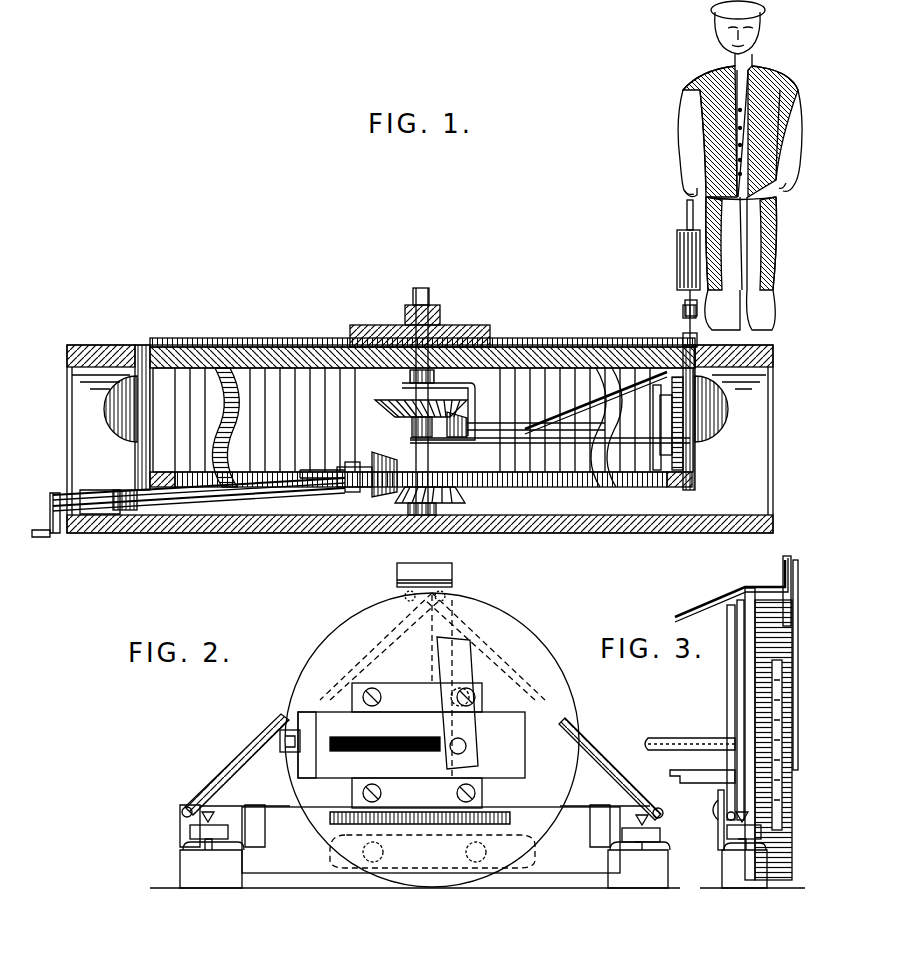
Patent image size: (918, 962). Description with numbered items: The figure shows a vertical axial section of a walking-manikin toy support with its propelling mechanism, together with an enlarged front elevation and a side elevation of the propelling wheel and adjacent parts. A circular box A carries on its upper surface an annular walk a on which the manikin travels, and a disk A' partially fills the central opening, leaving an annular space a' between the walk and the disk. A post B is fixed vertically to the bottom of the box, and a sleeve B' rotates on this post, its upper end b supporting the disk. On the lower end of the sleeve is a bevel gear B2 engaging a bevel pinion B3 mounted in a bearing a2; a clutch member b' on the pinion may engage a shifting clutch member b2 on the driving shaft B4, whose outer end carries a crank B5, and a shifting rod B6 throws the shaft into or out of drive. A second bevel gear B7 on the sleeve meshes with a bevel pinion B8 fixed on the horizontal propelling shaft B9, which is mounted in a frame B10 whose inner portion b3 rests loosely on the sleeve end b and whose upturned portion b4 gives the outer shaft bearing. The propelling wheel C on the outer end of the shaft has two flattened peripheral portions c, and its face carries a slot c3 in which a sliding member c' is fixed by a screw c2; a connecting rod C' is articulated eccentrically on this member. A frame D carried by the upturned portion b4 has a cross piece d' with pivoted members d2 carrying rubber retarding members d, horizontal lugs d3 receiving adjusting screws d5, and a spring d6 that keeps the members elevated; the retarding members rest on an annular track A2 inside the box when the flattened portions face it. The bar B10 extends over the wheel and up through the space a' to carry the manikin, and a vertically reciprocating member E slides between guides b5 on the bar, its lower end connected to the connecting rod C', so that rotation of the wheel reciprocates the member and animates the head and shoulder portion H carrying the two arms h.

In FIG. 1, the circular box A is at (421, 418).
In FIG. 1, the annular walk a is at (104, 330).
In FIG. 1, the annular space a' is at (416, 396).
In FIG. 1, the disk A' is at (422, 388).
In FIG. 1, the annular track A2 is at (718, 488).
In FIG. 2, the annular track A2 is at (542, 873).
In FIG. 1, the bearing a2 is at (352, 467).
In FIG. 1, the post B is at (420, 389).
In FIG. 1, the upper end of sleeve b is at (386, 383).
In FIG. 1, the clutch member b' is at (319, 458).
In FIG. 1, the shifting clutch member b2 is at (340, 488).
In FIG. 1, the frame portion b3 is at (462, 385).
In FIG. 1, the upturned portion of frame b4 is at (683, 405).
In FIG. 3, the upturned portion of frame b4 is at (737, 685).
In FIG. 1, the guides b5 is at (683, 309).
In FIG. 1, the sleeve B' is at (437, 446).
In FIG. 1, the bevel gear B2 is at (450, 505).
In FIG. 1, the bevel pinion B3 is at (385, 452).
In FIG. 1, the driving shaft B4 is at (273, 496).
In FIG. 1, the crank B5 is at (42, 538).
In FIG. 1, the shifting rod B6 is at (212, 500).
In FIG. 1, the second bevel gear B7 is at (375, 406).
In FIG. 1, the bevel pinion B8 is at (467, 425).
In FIG. 1, the horizontal propelling shaft B9 is at (532, 427).
In FIG. 3, the horizontal propelling shaft B9 is at (690, 728).
In FIG. 1, the frame B10 is at (565, 462).
In FIG. 2, the frame B10 is at (397, 578).
In FIG. 3, the frame B10 is at (692, 780).
In FIG. 1, the propelling wheel C is at (706, 427).
In FIG. 2, the propelling wheel C is at (432, 740).
In FIG. 3, the propelling wheel C is at (779, 720).
In FIG. 2, the flattened peripheral portions c is at (438, 746).
In FIG. 2, the sliding member c' is at (411, 745).
In FIG. 2, the connecting rod C' is at (509, 690).
In FIG. 2, the screw c2 is at (310, 748).
In FIG. 2, the slot c3 is at (518, 722).
In FIG. 2, the frame D is at (252, 745).
In FIG. 3, the frame D is at (730, 726).
In FIG. 2, the rubber retarding members d is at (415, 884).
In FIG. 3, the rubber retarding members d is at (752, 879).
In FIG. 2, the cross piece d' is at (431, 769).
In FIG. 3, the cross piece d' is at (706, 828).
In FIG. 2, the pivoted members d2 is at (608, 905).
In FIG. 3, the pivoted members d2 is at (718, 850).
In FIG. 2, the horizontal lugs d3 is at (668, 836).
In FIG. 3, the horizontal lugs d3 is at (762, 832).
In FIG. 2, the adjusting screws d5 is at (664, 810).
In FIG. 3, the adjusting screws d5 is at (748, 815).
In FIG. 2, the spring d6 is at (422, 826).
In FIG. 3, the spring d6 is at (723, 799).
In FIG. 1, the vertically reciprocating member E is at (700, 284).
In FIG. 1, the head and shoulder portion H is at (722, 72).
In FIG. 1, the arms h is at (683, 184).